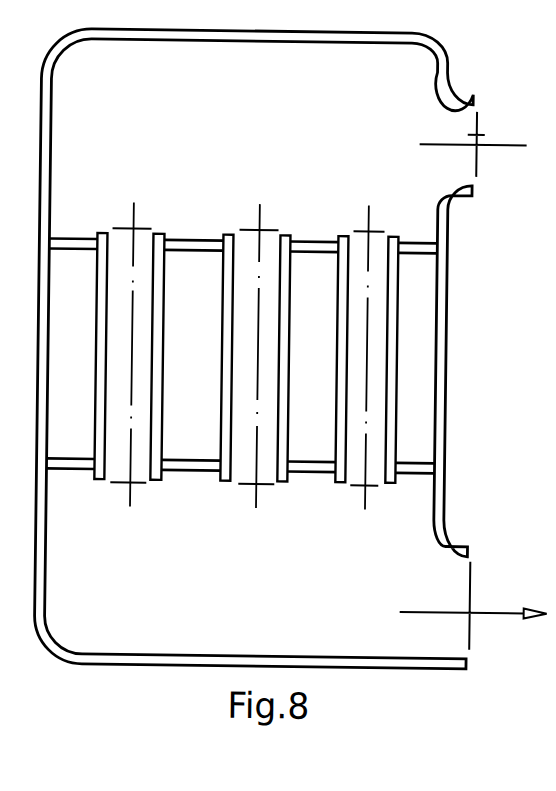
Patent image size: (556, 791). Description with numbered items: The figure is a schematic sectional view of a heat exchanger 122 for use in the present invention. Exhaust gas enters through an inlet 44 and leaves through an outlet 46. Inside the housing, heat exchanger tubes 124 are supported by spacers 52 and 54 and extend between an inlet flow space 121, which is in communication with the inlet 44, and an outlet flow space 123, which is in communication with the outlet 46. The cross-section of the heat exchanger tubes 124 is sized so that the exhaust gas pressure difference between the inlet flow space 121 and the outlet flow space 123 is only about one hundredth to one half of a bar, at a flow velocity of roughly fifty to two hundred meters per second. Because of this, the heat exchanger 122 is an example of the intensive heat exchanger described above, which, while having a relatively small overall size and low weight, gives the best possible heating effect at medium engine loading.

The inlet 44 is at (473, 144).
The outlet 46 is at (465, 570).
The spacer 52 is at (411, 236).
The spacer 54 is at (314, 471).
The inlet flow space 121 is at (265, 138).
The heat exchanger 122 is at (443, 55).
The outlet flow space 123 is at (267, 568).
The heat exchanger tubes 124 is at (140, 234).